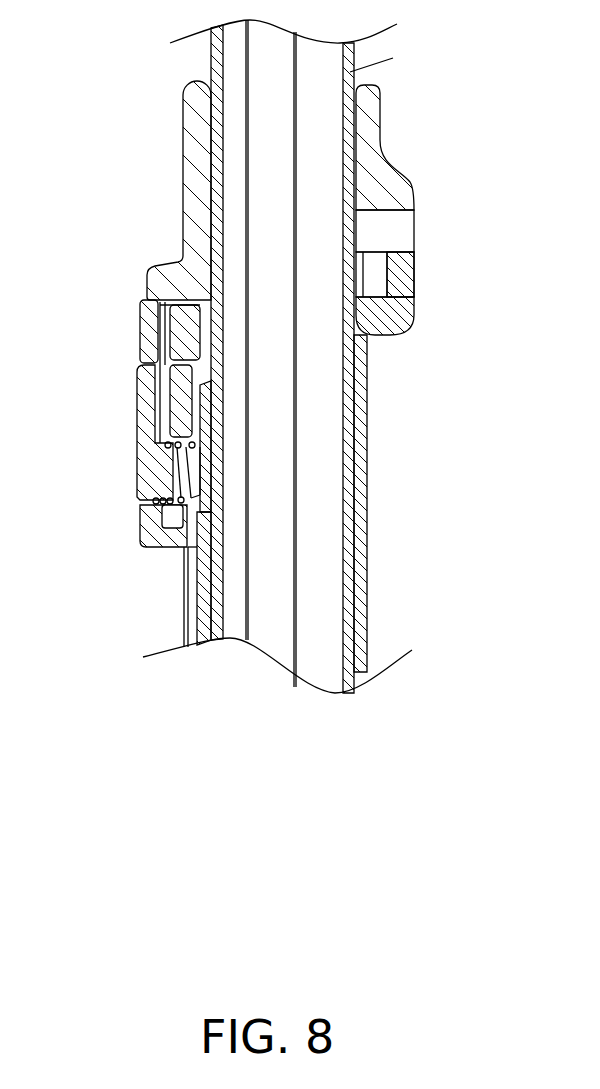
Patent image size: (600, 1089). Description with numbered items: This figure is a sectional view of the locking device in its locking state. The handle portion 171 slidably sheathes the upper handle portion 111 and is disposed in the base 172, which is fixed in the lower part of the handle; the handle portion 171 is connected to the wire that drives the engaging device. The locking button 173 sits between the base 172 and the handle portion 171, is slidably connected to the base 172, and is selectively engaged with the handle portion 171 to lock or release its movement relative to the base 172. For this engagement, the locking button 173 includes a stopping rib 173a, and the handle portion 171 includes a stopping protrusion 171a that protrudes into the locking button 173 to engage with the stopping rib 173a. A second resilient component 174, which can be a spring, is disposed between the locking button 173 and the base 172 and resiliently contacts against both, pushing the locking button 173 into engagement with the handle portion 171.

The upper handle portion 111 is at (218, 137).
The handle portion 171 is at (195, 185).
The stopping protrusion 171a is at (182, 393).
The base 172 is at (197, 542).
The locking button 173 is at (155, 472).
The stopping rib 173a is at (183, 328).
The second resilient component 174 is at (160, 500).